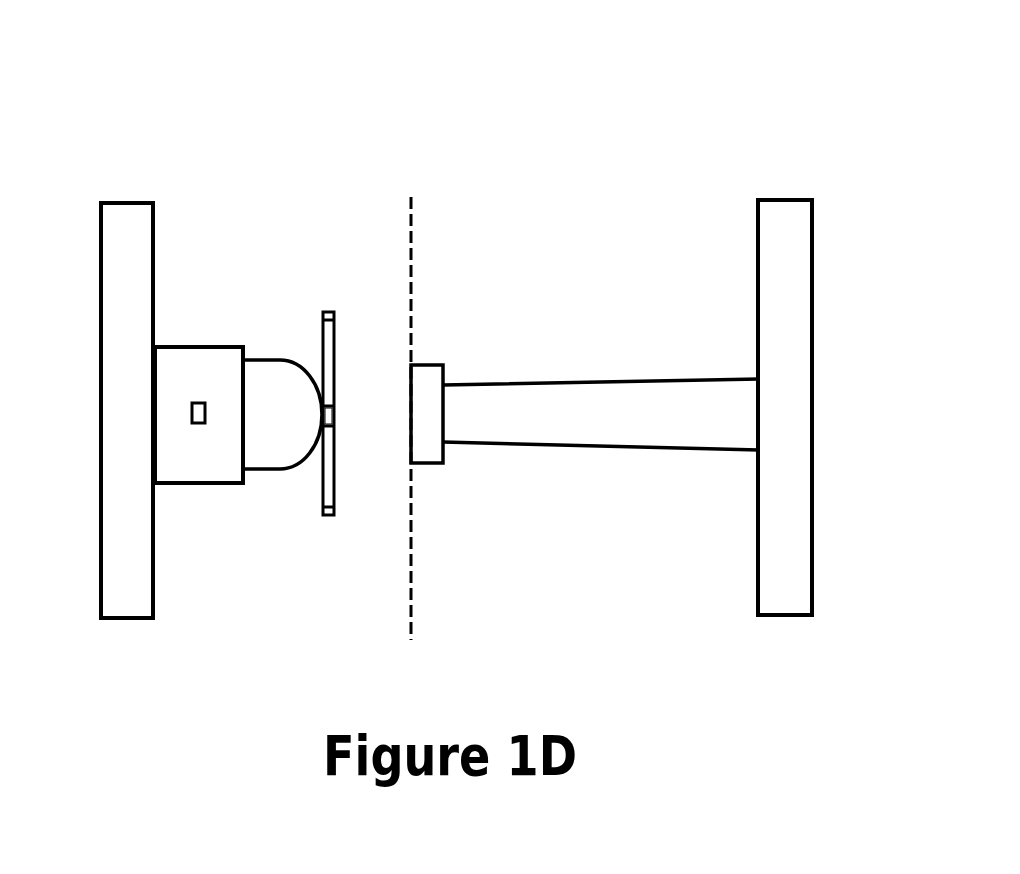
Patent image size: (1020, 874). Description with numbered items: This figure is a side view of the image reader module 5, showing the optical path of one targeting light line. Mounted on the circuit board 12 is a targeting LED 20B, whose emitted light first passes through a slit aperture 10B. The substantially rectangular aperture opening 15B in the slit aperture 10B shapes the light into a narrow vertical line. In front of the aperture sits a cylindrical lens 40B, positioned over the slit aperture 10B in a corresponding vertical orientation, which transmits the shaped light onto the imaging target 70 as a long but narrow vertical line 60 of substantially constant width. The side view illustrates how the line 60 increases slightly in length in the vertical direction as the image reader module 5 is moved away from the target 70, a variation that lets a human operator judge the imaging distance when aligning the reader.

The image reader module 5 is at (215, 102).
The circuit board 12 is at (101, 618).
The targeting LED 20B is at (243, 347).
The slit aperture 10B is at (334, 495).
The aperture opening 15B is at (334, 409).
The cylindrical lens 40B is at (443, 455).
The vertical line 60 is at (663, 449).
The imaging target 70 is at (808, 200).